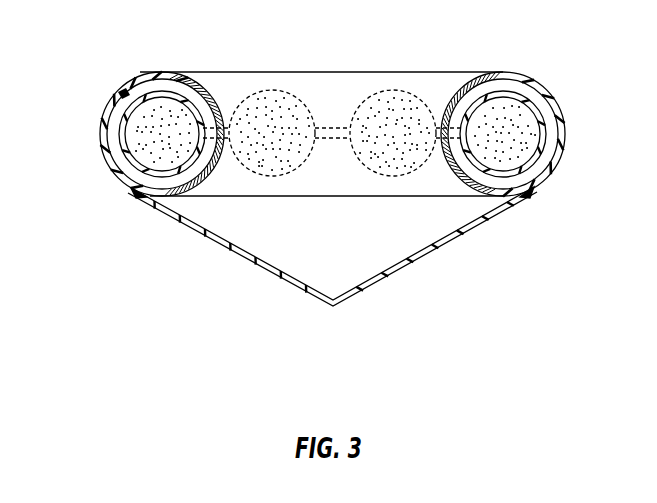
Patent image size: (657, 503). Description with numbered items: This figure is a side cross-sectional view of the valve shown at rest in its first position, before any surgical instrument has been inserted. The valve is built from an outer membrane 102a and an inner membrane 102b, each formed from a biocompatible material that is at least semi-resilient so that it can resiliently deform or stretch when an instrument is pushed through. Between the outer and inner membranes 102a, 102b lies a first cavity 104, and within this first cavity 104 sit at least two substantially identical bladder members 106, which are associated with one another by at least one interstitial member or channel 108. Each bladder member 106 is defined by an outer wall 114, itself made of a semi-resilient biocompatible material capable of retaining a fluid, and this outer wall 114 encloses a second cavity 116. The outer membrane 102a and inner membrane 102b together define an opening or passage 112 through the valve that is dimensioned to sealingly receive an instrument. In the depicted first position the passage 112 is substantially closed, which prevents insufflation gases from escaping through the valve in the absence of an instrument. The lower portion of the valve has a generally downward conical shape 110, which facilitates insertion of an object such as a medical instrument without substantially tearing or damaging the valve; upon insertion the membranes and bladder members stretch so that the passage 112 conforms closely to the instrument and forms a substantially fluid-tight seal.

The outer membrane 102a is at (177, 214).
The inner membrane 102b is at (202, 88).
The first cavity 104 is at (528, 90).
The bladder member 106 is at (122, 93).
The interstitial member or channel 108 is at (335, 127).
The downward conical shape 110 is at (447, 263).
The opening or passage 112 is at (363, 218).
The outer wall 114 is at (120, 136).
The second cavity 116 is at (121, 180).